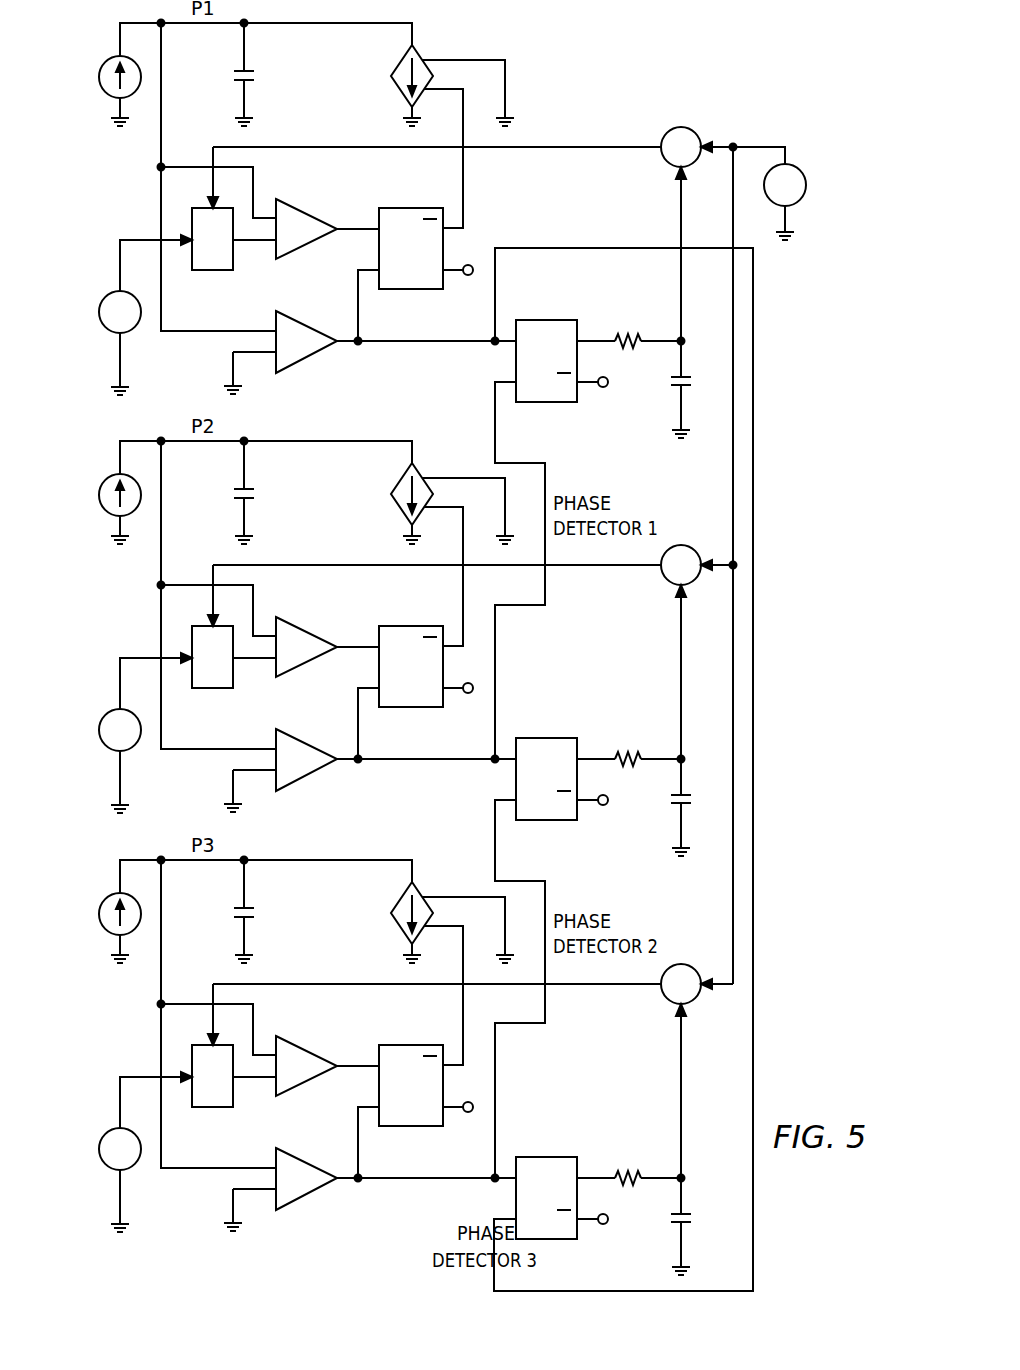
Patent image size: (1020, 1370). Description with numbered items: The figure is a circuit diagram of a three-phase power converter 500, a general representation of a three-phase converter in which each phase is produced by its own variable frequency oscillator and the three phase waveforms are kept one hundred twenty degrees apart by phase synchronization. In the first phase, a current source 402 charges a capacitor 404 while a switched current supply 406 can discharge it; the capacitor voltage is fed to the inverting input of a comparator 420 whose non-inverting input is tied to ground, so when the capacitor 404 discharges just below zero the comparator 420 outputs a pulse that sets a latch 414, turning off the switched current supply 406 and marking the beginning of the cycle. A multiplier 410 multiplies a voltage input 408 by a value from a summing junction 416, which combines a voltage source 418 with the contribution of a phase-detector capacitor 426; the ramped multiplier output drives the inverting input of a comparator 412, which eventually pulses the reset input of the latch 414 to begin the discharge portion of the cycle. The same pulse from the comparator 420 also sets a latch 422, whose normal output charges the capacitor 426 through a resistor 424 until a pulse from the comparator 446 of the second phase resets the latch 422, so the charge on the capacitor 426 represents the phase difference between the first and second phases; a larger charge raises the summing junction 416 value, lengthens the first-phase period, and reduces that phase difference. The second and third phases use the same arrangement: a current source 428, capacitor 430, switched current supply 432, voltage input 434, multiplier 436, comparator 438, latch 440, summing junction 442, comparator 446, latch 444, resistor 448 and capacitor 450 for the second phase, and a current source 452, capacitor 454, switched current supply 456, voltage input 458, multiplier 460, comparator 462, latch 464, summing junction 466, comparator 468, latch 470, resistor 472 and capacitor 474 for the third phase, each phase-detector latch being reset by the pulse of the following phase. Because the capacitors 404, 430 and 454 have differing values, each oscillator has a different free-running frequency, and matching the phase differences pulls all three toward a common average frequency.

The power converter 500 is at (736, 54).
The current source 402 is at (104, 60).
The capacitor 404 is at (257, 76).
The switched current supply 406 is at (392, 98).
The voltage input 408 is at (98, 318).
The multiplier 410 is at (212, 270).
The comparator 412 is at (312, 205).
The latch 414 is at (410, 207).
The summing junction 416 is at (667, 133).
The voltage source 418 is at (804, 172).
The comparator 420 is at (306, 362).
The latch 422 is at (545, 403).
The resistor R1 424 is at (622, 335).
The capacitor C1 426 is at (667, 383).
The current source 428 is at (94, 495).
The capacitor 430 is at (250, 492).
The voltage controlled current source 432 is at (393, 500).
The voltage source 434 is at (89, 738).
The multiplier 436 is at (217, 683).
The comparator 438 is at (309, 631).
The flip-flop 440 is at (411, 641).
The summer 442 is at (665, 577).
The flip-flop 444 is at (546, 754).
The comparator 446 is at (309, 777).
The resistor R2 448 is at (619, 724).
The capacitor C2 450 is at (664, 819).
The current source 452 is at (94, 914).
The capacitor 454 is at (250, 911).
The voltage controlled current source 456 is at (393, 919).
The voltage source 458 is at (89, 1157).
The multiplier 460 is at (217, 1102).
The comparator 462 is at (309, 1050).
The flip-flop 464 is at (411, 1060).
The summer 466 is at (665, 996).
The comparator 468 is at (309, 1196).
The flip-flop 470 is at (546, 1173).
The resistor R3 472 is at (619, 1143).
The capacitor C3 474 is at (664, 1238).